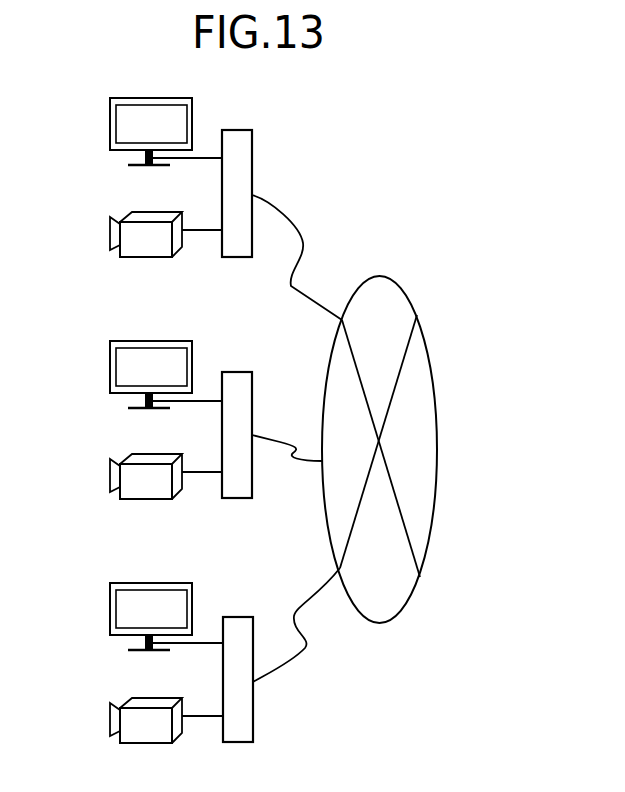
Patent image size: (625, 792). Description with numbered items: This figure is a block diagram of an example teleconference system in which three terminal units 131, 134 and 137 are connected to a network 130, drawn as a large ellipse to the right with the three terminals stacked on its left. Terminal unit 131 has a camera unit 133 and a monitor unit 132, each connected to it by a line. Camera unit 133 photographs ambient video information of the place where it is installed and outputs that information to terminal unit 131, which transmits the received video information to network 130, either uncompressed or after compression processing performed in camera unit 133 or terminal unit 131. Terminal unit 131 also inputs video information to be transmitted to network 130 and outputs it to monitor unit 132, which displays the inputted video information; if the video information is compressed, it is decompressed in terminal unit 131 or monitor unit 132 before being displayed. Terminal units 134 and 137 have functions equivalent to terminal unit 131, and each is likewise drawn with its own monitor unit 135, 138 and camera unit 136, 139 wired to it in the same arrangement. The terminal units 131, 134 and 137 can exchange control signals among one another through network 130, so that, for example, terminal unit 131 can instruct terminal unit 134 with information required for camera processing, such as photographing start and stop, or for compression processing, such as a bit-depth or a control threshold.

The network 130 is at (437, 278).
The terminal unit 131 is at (280, 115).
The monitor unit 132 is at (111, 121).
The camera unit 133 is at (111, 243).
The terminal unit 134 is at (252, 372).
The display 135 is at (111, 362).
The camera 136 is at (112, 484).
The terminal unit 137 is at (280, 600).
The display 138 is at (113, 606).
The camera 139 is at (113, 727).